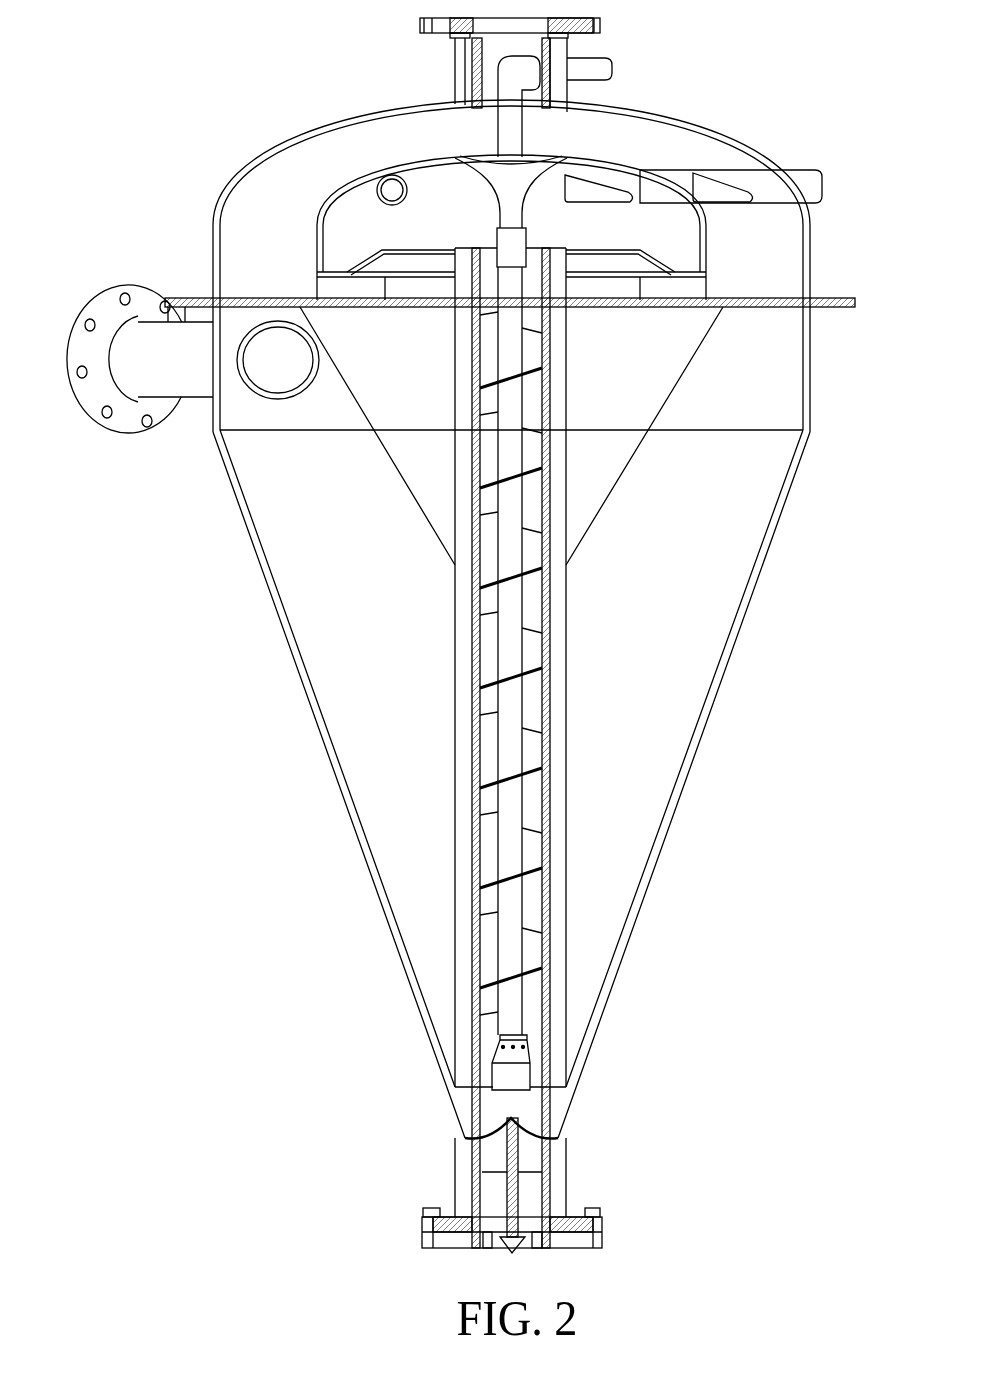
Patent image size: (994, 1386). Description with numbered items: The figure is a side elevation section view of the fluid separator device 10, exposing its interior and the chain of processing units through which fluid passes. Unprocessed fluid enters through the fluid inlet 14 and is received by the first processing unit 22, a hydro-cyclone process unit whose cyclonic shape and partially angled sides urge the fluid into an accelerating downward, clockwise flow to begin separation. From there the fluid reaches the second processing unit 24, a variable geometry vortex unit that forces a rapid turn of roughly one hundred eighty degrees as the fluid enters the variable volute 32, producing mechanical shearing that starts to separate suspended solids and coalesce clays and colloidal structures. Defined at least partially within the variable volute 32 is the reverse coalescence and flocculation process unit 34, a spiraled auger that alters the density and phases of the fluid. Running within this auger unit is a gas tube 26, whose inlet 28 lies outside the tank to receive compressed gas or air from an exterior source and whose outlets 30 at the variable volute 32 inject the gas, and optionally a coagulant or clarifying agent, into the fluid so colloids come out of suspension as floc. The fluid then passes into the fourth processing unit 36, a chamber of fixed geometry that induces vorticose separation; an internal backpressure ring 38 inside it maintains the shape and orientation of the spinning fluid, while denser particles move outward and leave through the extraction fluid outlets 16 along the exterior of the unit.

The fluid separator device 10 is at (802, 76).
The fluid inlet 14 is at (130, 290).
The extraction fluid outlets 16 is at (392, 176).
The first processing unit 22 is at (330, 582).
The second processing unit 24 is at (492, 1092).
The gas tube 26 is at (523, 120).
The inlet 28 is at (612, 70).
The outlets 30 is at (528, 1042).
The variable volute 32 is at (458, 1068).
The reverse coalescence and flocculation process unit 34 is at (532, 450).
The fourth processing unit 36 is at (672, 236).
The internal backpressure ring 38 is at (350, 268).